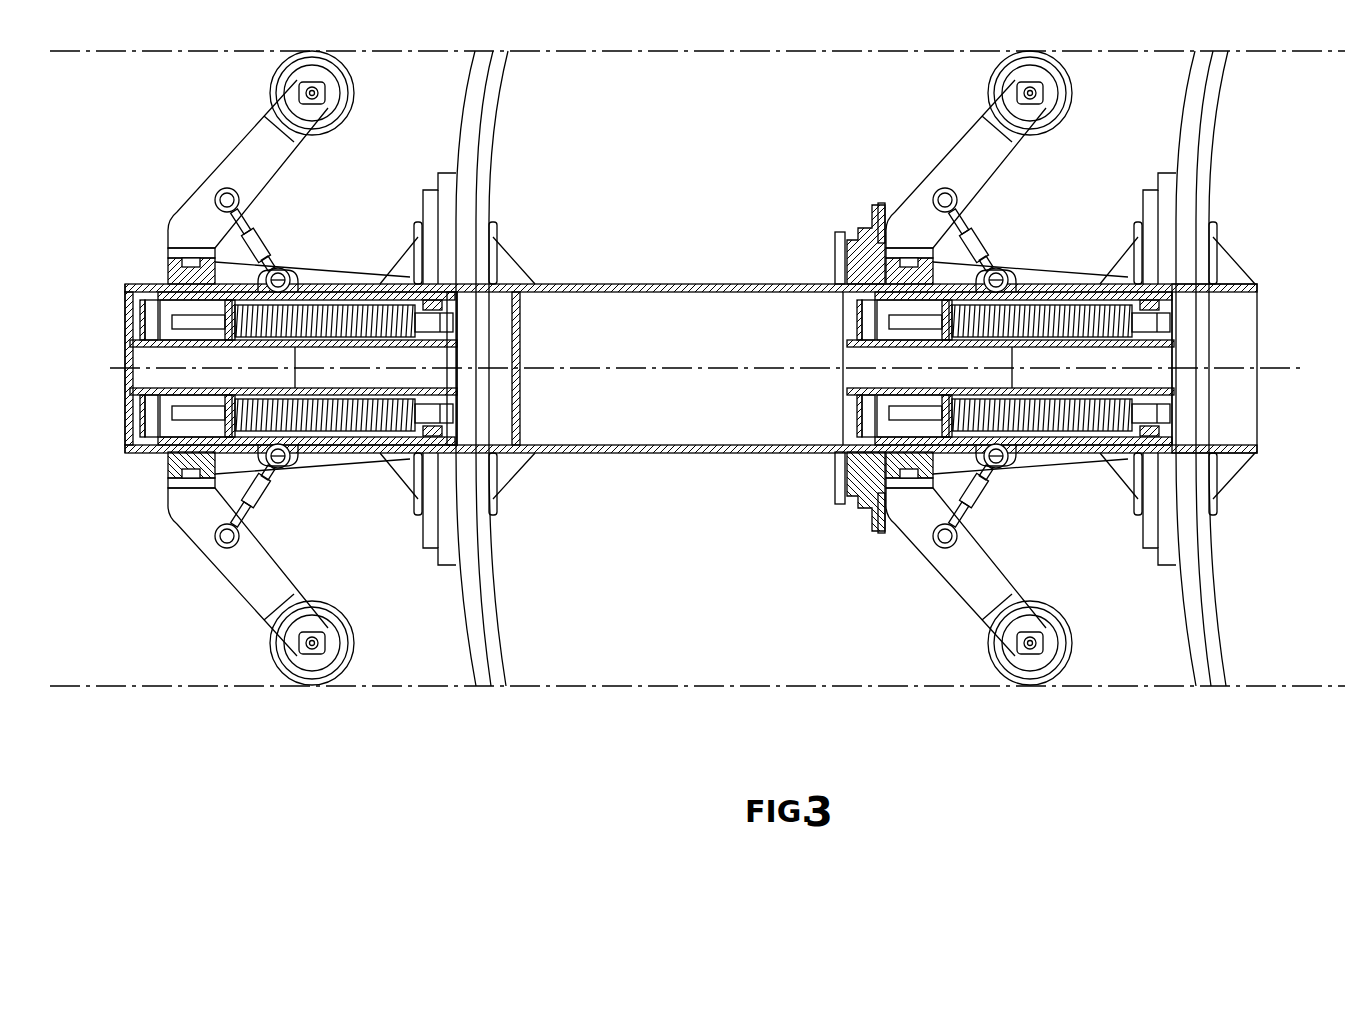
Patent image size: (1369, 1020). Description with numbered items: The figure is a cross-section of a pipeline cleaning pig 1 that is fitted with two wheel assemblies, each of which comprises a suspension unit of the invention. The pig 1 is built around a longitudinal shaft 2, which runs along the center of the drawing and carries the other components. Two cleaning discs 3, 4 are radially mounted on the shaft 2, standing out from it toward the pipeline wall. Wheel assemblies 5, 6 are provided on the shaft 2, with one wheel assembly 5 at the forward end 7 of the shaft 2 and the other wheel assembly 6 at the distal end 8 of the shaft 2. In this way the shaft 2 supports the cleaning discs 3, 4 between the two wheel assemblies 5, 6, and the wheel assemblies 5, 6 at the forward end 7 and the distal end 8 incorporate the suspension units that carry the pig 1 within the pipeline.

The pipeline cleaning pig 1 is at (705, 535).
The longitudinal shaft 2 is at (605, 455).
The cleaning disc 3 is at (495, 117).
The cleaning disc 4 is at (1222, 160).
The wheel assembly 5 is at (168, 460).
The wheel assembly 6 is at (868, 510).
The forward end 7 is at (122, 305).
The distal end 8 is at (1258, 340).